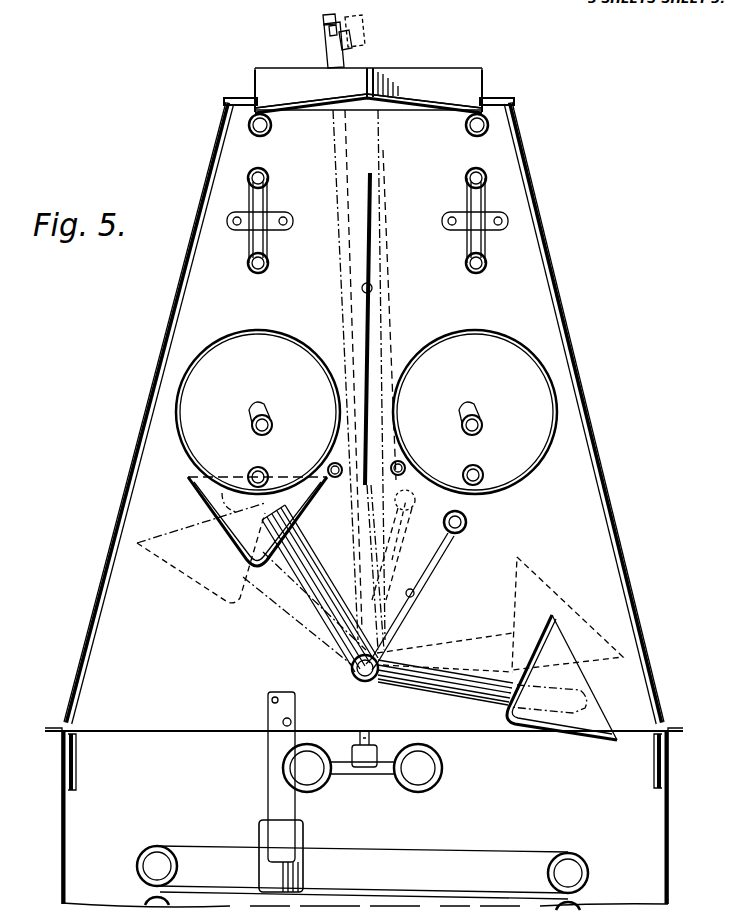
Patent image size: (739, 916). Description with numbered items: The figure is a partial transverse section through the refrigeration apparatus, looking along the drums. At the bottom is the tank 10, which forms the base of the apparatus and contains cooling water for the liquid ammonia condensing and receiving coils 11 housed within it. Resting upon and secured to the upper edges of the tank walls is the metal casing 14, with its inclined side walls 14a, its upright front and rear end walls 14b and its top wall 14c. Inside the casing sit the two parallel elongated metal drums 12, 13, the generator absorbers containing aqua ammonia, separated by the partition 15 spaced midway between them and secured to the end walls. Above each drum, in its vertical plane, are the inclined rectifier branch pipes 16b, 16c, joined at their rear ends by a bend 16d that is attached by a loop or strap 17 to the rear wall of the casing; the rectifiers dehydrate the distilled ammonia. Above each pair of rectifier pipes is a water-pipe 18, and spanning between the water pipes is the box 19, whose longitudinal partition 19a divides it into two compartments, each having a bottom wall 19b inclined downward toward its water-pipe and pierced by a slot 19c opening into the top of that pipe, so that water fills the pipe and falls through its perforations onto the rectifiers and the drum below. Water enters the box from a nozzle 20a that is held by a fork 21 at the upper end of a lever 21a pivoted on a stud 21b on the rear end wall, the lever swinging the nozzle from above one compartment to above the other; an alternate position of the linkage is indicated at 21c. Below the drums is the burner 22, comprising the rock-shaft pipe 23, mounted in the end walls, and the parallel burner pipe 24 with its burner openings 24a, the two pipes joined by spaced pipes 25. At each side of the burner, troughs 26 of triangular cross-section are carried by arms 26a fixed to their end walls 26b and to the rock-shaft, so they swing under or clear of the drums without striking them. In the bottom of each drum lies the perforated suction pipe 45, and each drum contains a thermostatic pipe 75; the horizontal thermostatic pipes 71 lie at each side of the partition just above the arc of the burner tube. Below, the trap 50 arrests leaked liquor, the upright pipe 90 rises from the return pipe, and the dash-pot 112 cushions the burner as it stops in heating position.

The tank 10 is at (53, 843).
The liquid ammonia condensing and receiving coils 11 is at (405, 853).
The generator absorber drum 12 is at (474, 329).
The generator absorber drum 13 is at (273, 329).
The metal casing 14 is at (364, 395).
The inclined side wall 14a is at (178, 297).
The end wall 14b is at (380, 172).
The top wall 14c is at (500, 100).
The partition 15 is at (381, 380).
The branch pipe 16b is at (252, 270).
The branch pipe 16c is at (266, 174).
The bend 16d is at (268, 236).
The loop or strap 17 is at (258, 222).
The water-pipe 18 is at (271, 130).
The box 19 is at (365, 60).
The partition 19a is at (374, 80).
The bottom wall 19b is at (293, 108).
The slot 19c is at (254, 104).
The nozzle 20a is at (350, 18).
The fork 21 is at (340, 37).
The lever 21a is at (346, 48).
The stud 21b is at (373, 288).
The link extension 21c is at (396, 574).
The burner 22 is at (399, 646).
The pipe 23 is at (358, 681).
The pipe 24 is at (435, 544).
The burner openings 24a is at (448, 513).
The pipes 25 is at (416, 581).
The trough 26 is at (237, 568).
The arm 26a is at (305, 576).
The end wall 26b is at (262, 516).
The suction pipe 45 is at (267, 476).
The trap 50 is at (286, 762).
The horizontal pipe 71 is at (337, 462).
The pipe 75 is at (270, 416).
The upright pipe 90 is at (368, 731).
The dash-pot 112 is at (276, 788).